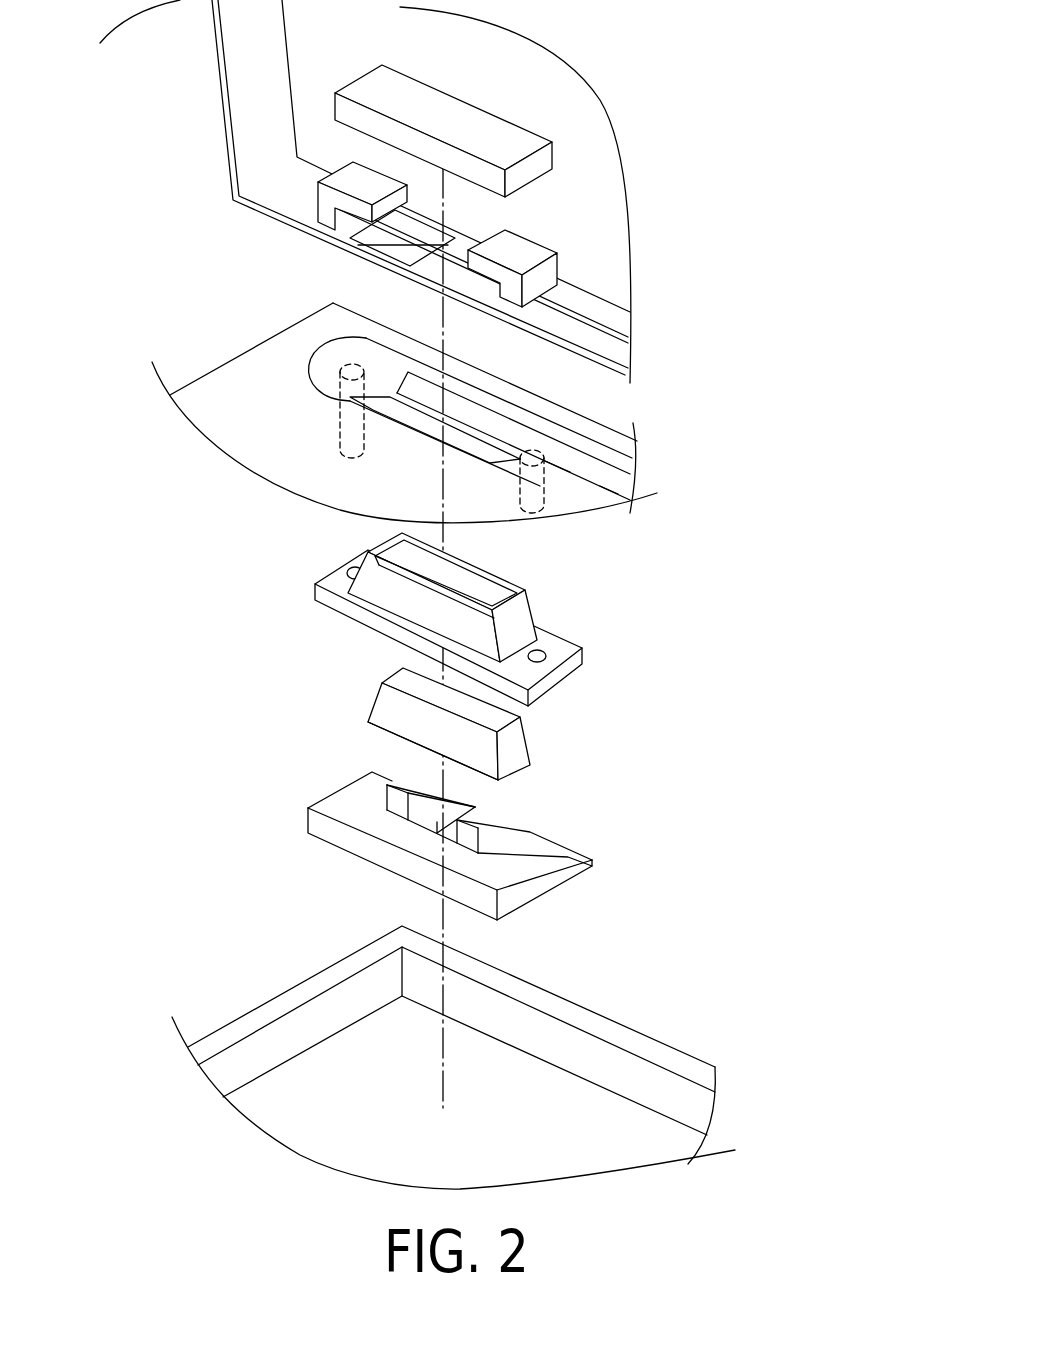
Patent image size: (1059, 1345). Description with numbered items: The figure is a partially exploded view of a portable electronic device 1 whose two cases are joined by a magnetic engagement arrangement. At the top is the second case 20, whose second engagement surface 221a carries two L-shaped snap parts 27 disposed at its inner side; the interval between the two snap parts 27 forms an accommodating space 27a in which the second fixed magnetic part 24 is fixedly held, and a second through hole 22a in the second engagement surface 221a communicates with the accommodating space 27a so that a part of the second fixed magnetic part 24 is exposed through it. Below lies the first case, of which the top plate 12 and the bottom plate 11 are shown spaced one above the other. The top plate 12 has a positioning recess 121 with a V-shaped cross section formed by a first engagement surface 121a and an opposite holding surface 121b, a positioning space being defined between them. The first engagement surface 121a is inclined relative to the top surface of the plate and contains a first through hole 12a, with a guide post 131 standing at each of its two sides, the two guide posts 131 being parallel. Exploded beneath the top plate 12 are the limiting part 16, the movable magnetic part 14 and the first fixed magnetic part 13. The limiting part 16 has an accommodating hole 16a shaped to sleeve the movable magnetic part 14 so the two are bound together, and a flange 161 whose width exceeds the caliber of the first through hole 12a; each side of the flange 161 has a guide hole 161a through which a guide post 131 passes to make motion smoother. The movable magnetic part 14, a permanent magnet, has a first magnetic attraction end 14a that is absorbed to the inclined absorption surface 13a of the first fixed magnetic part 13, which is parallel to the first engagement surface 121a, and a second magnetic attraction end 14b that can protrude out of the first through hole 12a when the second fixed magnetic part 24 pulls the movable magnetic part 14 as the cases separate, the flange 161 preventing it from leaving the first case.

The portable electronic device 1 is at (788, 70).
The bottom plate 11 is at (268, 1038).
The top plate 12 is at (230, 397).
The first through hole 12a is at (462, 428).
The positioning recess 121 is at (417, 378).
The first engagement surface 121a is at (562, 470).
The holding surface 121b is at (604, 484).
The first fixed magnetic part 13 is at (318, 822).
The absorption surface 13a is at (431, 776).
The guide post 131 is at (350, 420).
The movable magnetic part 14 is at (383, 707).
The first magnetic attraction end 14a is at (494, 795).
The second magnetic attraction end 14b is at (496, 708).
The limiting part 16 is at (366, 550).
The accommodating hole 16a is at (468, 568).
The flange 161 is at (330, 580).
The guide hole 161a is at (360, 556).
The second case 20 is at (538, 82).
The second through hole 22a is at (434, 252).
The second engagement surface 221a is at (288, 236).
The second fixed magnetic part 24 is at (435, 118).
The snap part 27 is at (322, 180).
The accommodating space 27a is at (399, 252).